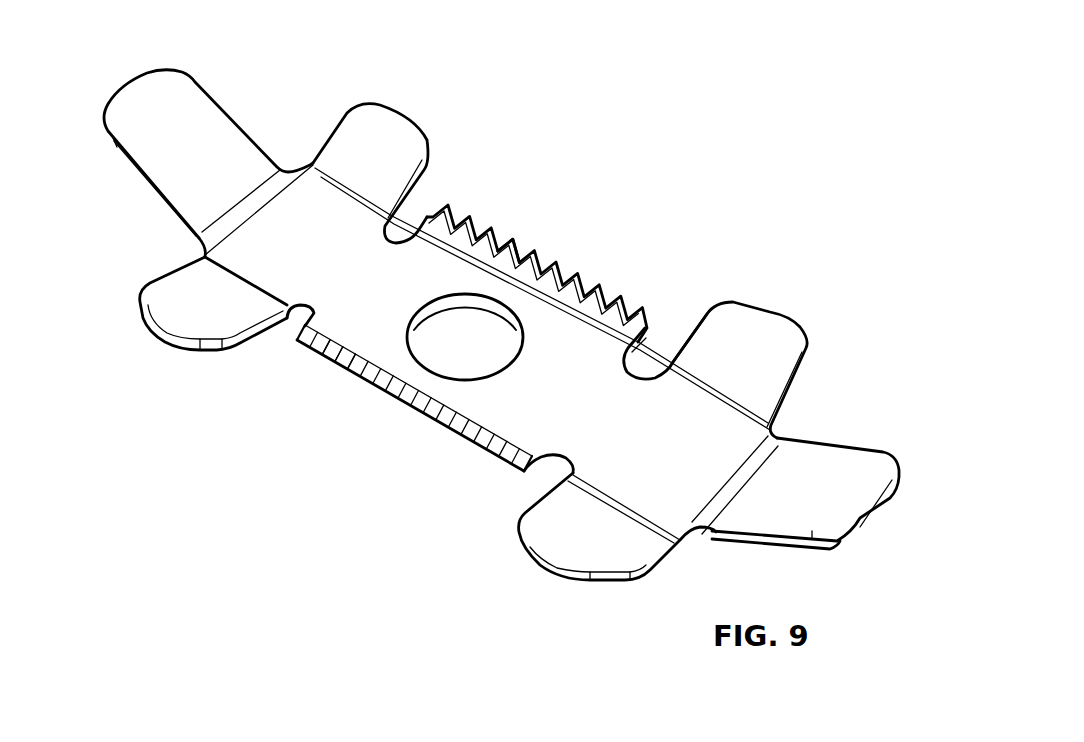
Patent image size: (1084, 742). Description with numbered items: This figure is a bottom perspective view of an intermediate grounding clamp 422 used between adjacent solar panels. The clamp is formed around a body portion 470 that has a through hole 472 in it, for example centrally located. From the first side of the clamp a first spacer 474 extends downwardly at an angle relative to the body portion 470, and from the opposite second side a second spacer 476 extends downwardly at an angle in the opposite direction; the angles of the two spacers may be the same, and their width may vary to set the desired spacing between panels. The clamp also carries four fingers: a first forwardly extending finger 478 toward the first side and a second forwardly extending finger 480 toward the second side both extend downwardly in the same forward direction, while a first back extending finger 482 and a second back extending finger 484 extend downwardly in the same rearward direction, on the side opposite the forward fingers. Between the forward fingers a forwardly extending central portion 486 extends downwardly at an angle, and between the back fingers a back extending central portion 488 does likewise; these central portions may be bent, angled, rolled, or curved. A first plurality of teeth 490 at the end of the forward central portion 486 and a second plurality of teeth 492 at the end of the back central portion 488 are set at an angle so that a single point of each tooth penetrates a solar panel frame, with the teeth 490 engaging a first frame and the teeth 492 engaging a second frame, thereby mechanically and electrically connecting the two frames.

The intermediate grounding clamp 422 is at (762, 156).
The body portion 470 is at (560, 372).
The through hole 472 is at (458, 300).
The first spacer 474 is at (145, 104).
The second spacer 476 is at (867, 472).
The first forwardly extending finger 478 is at (381, 136).
The second forwardly extending finger 480 is at (767, 335).
The first back extending finger 482 is at (185, 311).
The second back extending finger 484 is at (578, 557).
The forwardly extending central portion 486 is at (505, 272).
The back extending central portion 488 is at (432, 410).
The first plurality of teeth 490 is at (547, 258).
The second plurality of teeth 492 is at (357, 366).